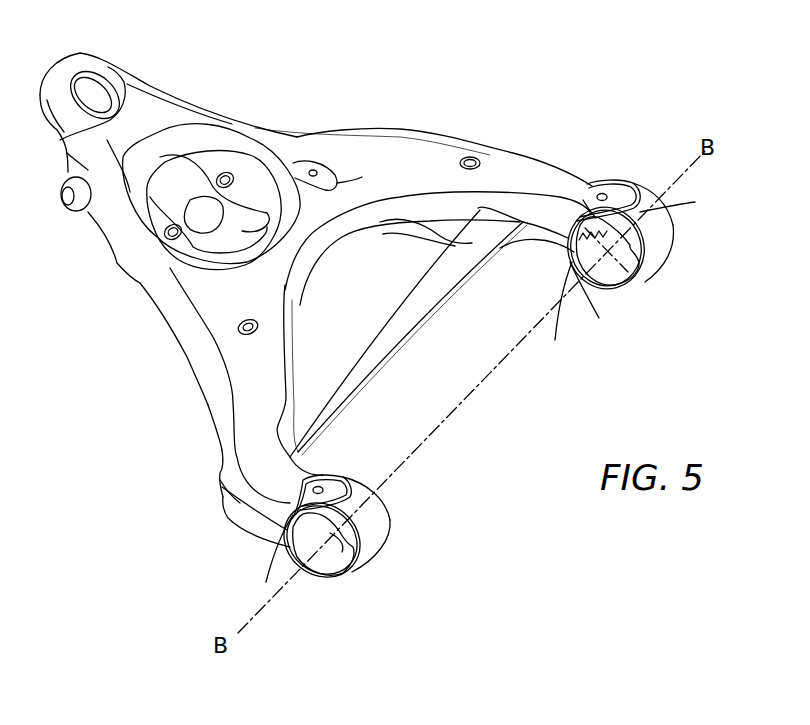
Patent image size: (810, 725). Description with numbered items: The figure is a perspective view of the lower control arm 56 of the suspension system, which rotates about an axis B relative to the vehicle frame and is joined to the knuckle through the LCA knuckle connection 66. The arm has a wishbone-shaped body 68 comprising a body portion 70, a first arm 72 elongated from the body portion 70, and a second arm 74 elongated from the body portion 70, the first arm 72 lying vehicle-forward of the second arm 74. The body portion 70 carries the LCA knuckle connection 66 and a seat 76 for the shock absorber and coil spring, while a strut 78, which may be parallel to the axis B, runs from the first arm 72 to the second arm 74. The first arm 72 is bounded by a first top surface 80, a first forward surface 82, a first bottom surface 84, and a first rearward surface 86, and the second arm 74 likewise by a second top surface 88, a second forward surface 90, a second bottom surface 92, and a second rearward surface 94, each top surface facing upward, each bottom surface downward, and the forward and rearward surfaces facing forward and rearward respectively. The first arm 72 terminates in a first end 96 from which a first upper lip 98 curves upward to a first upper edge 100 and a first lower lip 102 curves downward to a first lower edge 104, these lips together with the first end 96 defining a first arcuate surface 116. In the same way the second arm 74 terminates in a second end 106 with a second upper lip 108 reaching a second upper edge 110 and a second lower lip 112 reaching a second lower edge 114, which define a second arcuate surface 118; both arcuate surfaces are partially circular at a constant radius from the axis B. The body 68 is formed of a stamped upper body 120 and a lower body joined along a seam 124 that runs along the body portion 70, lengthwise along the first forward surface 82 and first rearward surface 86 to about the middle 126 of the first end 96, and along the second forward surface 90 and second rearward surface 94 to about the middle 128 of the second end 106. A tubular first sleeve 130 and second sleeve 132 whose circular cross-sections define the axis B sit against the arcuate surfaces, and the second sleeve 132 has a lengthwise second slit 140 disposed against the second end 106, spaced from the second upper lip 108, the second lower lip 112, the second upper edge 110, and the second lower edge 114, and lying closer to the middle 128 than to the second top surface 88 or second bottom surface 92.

The lower control arm 56 is at (380, 74).
The LCA knuckle connection 66 is at (100, 73).
The body 68 is at (113, 268).
The body portion 70 is at (113, 237).
The first arm 72 is at (212, 413).
The second arm 74 is at (462, 140).
The seat 76 is at (243, 193).
The strut 78 is at (415, 328).
The first top surface 80 is at (227, 380).
The first forward surface 82 is at (205, 389).
The first bottom surface 84 is at (220, 510).
The first rearward surface 86 is at (293, 373).
The second top surface 88 is at (425, 232).
The second forward surface 90 is at (507, 244).
The second bottom surface 92 is at (533, 238).
The second rearward surface 94 is at (507, 148).
The first end 96 is at (287, 557).
The first upper lip 98 is at (340, 474).
The first upper edge 100 is at (358, 503).
The first lower lip 102 is at (295, 565).
The first lower edge 104 is at (297, 572).
The second end 106 is at (607, 187).
The second upper lip 108 is at (630, 177).
The second upper edge 110 is at (684, 207).
The second lower lip 112 is at (556, 314).
The second lower edge 114 is at (594, 302).
The first arcuate surface 116 is at (310, 477).
The second arcuate surface 118 is at (583, 200).
The upper body 120 is at (218, 472).
The seam 124 is at (223, 523).
The middle of the first end 126 is at (220, 487).
The middle of the second end 128 is at (560, 217).
The first sleeve 130 is at (391, 527).
The second sleeve 132 is at (676, 233).
The second slit 140 is at (637, 277).